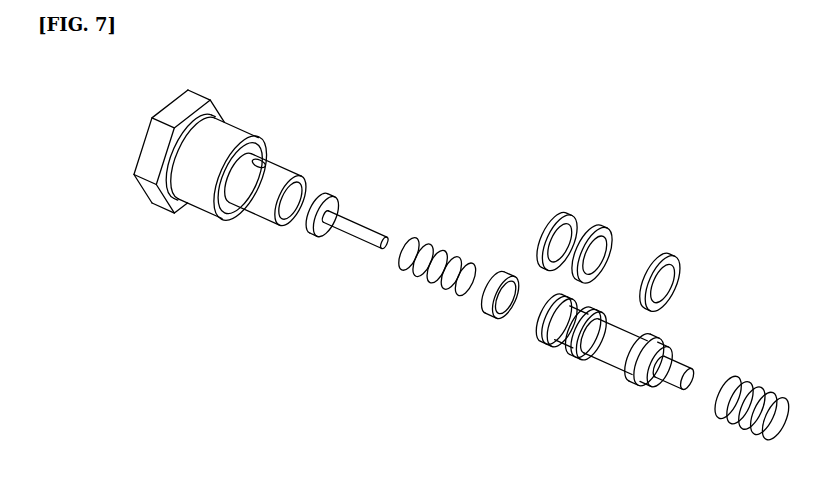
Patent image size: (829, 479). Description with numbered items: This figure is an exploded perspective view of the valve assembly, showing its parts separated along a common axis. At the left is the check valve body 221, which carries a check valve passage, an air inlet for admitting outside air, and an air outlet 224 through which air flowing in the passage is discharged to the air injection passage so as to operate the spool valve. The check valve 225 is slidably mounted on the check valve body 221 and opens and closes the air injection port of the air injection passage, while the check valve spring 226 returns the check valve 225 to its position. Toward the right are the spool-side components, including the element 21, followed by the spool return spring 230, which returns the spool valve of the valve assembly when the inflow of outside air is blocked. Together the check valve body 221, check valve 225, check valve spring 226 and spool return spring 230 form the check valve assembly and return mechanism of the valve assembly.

The check valve body 221 is at (197, 197).
The air outlet 224 is at (266, 158).
The check valve 225 is at (357, 228).
The check valve spring 226 is at (440, 245).
The shaft (valve spool) 21 is at (625, 358).
The spool return spring 230 is at (755, 390).